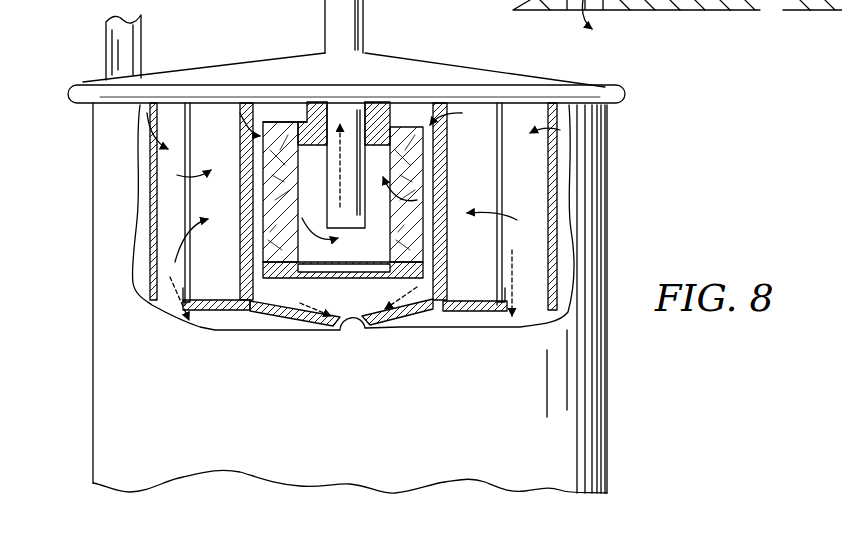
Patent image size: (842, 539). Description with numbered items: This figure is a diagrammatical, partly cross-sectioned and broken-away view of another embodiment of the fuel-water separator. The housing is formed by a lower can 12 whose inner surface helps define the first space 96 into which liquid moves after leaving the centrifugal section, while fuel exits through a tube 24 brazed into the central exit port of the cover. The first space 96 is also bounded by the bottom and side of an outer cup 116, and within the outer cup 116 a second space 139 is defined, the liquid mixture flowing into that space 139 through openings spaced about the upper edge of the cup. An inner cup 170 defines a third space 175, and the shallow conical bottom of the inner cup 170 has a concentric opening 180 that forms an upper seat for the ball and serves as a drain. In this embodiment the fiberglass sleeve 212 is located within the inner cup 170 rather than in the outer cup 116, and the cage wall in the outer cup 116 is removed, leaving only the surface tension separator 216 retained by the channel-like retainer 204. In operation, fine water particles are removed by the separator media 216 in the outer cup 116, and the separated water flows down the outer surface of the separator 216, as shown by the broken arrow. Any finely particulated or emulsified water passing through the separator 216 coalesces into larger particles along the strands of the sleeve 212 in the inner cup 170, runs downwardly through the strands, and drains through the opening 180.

The can portion 12 is at (607, 340).
The tube 24 is at (140, 38).
The first space 96 is at (138, 203).
The outer cup 116 is at (142, 173).
The second space 139 is at (540, 166).
The inner cup 170 is at (425, 178).
The third space 175 is at (366, 300).
The opening 180 is at (344, 331).
The channel-like retainer 204 is at (228, 306).
The sleeve 212 is at (277, 167).
The surface tension separator 216 is at (501, 192).